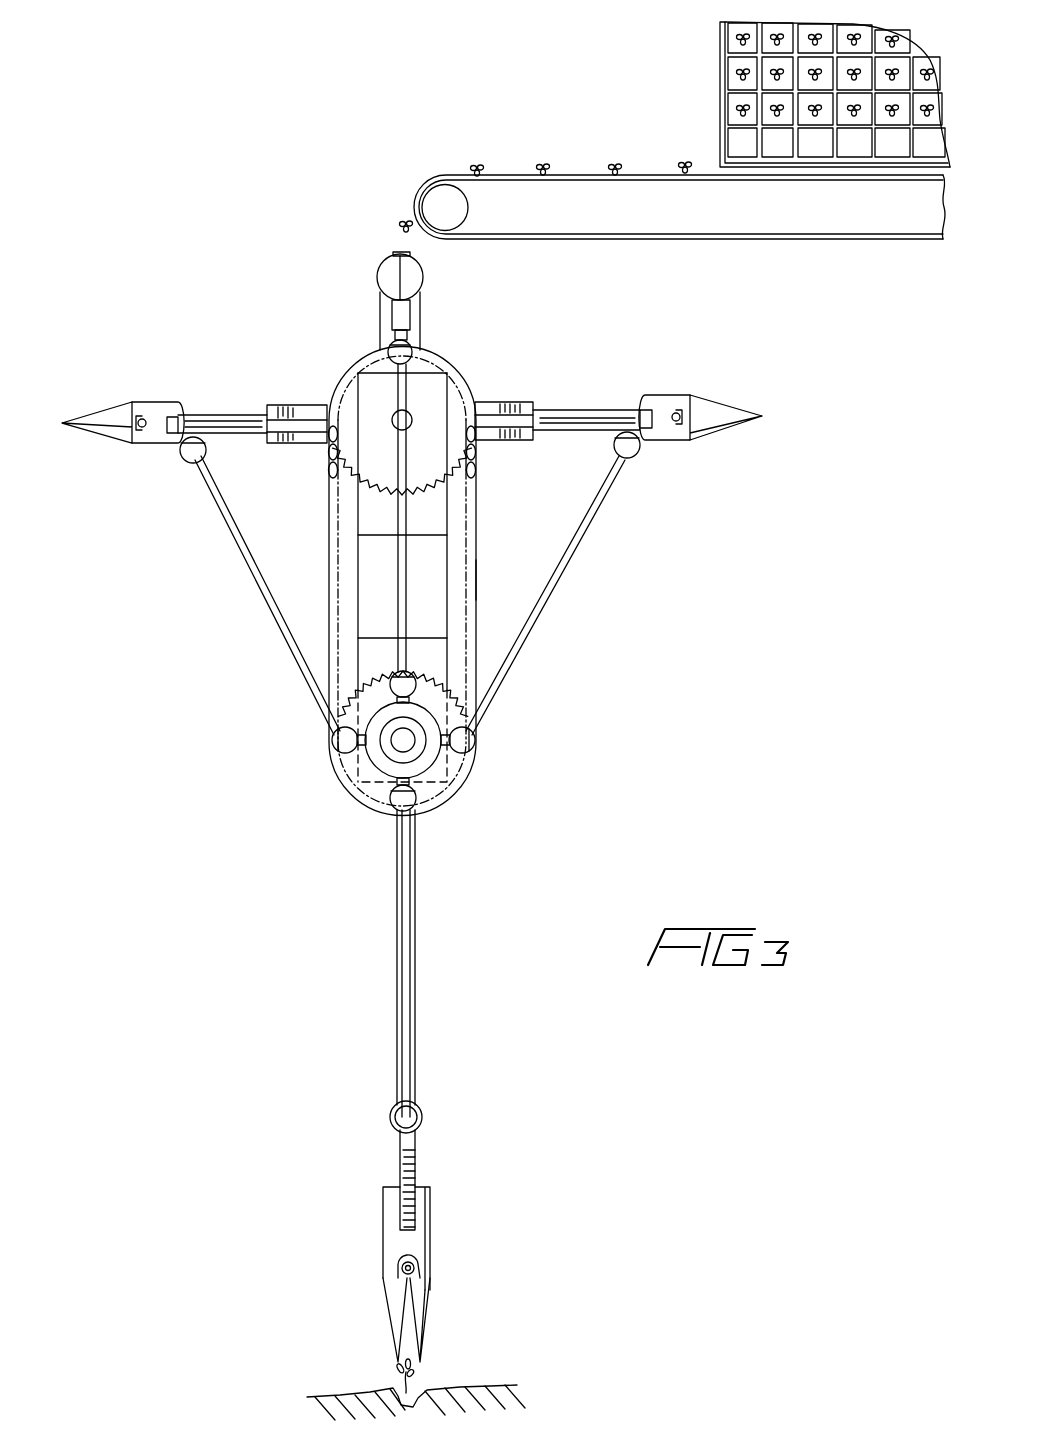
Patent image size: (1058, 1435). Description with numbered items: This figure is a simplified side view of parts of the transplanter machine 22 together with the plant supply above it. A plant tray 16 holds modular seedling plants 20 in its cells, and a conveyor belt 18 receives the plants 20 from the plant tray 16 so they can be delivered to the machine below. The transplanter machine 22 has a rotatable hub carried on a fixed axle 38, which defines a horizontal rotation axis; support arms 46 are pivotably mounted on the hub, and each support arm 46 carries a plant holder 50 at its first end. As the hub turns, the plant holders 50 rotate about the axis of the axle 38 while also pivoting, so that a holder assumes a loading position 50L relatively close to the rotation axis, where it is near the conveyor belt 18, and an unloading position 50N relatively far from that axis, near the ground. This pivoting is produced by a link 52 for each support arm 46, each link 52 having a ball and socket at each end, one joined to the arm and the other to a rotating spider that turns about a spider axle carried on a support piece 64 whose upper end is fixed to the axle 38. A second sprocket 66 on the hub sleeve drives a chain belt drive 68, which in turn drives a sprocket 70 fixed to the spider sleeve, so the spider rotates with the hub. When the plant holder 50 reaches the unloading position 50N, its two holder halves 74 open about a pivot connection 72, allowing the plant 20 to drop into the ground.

The plant tray 16 is at (720, 82).
The conveyor belt 18 is at (663, 234).
The modular seedling plant 20 is at (472, 172).
The transplanter machine 22 is at (572, 772).
The axle 38 is at (410, 417).
The support arm 46 is at (578, 410).
The plant holder 50 is at (665, 405).
The loading position 50L is at (425, 272).
The unloading position 50N is at (432, 1212).
The link 52 is at (555, 578).
The support piece 64 is at (357, 588).
The second sprocket 66 is at (453, 470).
The chain belt drive 68 is at (478, 578).
The sprocket 70 is at (450, 683).
The pivot connection 72 is at (414, 1266).
The holder half 74 is at (397, 1300).